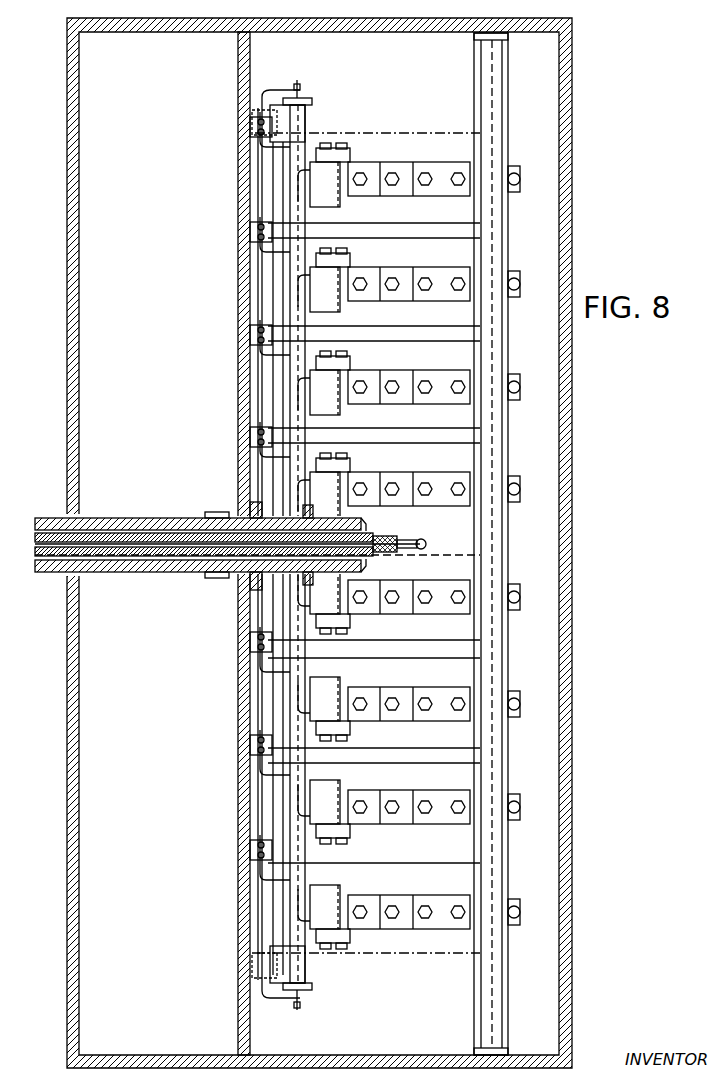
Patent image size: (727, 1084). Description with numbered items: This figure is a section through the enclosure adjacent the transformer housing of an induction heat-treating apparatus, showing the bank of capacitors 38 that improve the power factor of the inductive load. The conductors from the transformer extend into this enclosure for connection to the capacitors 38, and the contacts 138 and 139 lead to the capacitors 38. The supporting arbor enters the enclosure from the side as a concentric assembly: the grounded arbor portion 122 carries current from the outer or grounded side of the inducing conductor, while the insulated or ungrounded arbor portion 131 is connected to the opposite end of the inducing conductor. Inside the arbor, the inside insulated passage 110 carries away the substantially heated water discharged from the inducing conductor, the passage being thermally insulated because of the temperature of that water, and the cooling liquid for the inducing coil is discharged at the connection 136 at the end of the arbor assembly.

The capacitors 38 is at (428, 630).
The inside insulated passage 110 is at (243, 554).
The arbor portion 122 is at (166, 518).
The insulated arbor portion 131 is at (152, 560).
The connection 136 is at (425, 541).
The contact 138 is at (218, 580).
The contact 139 is at (348, 526).